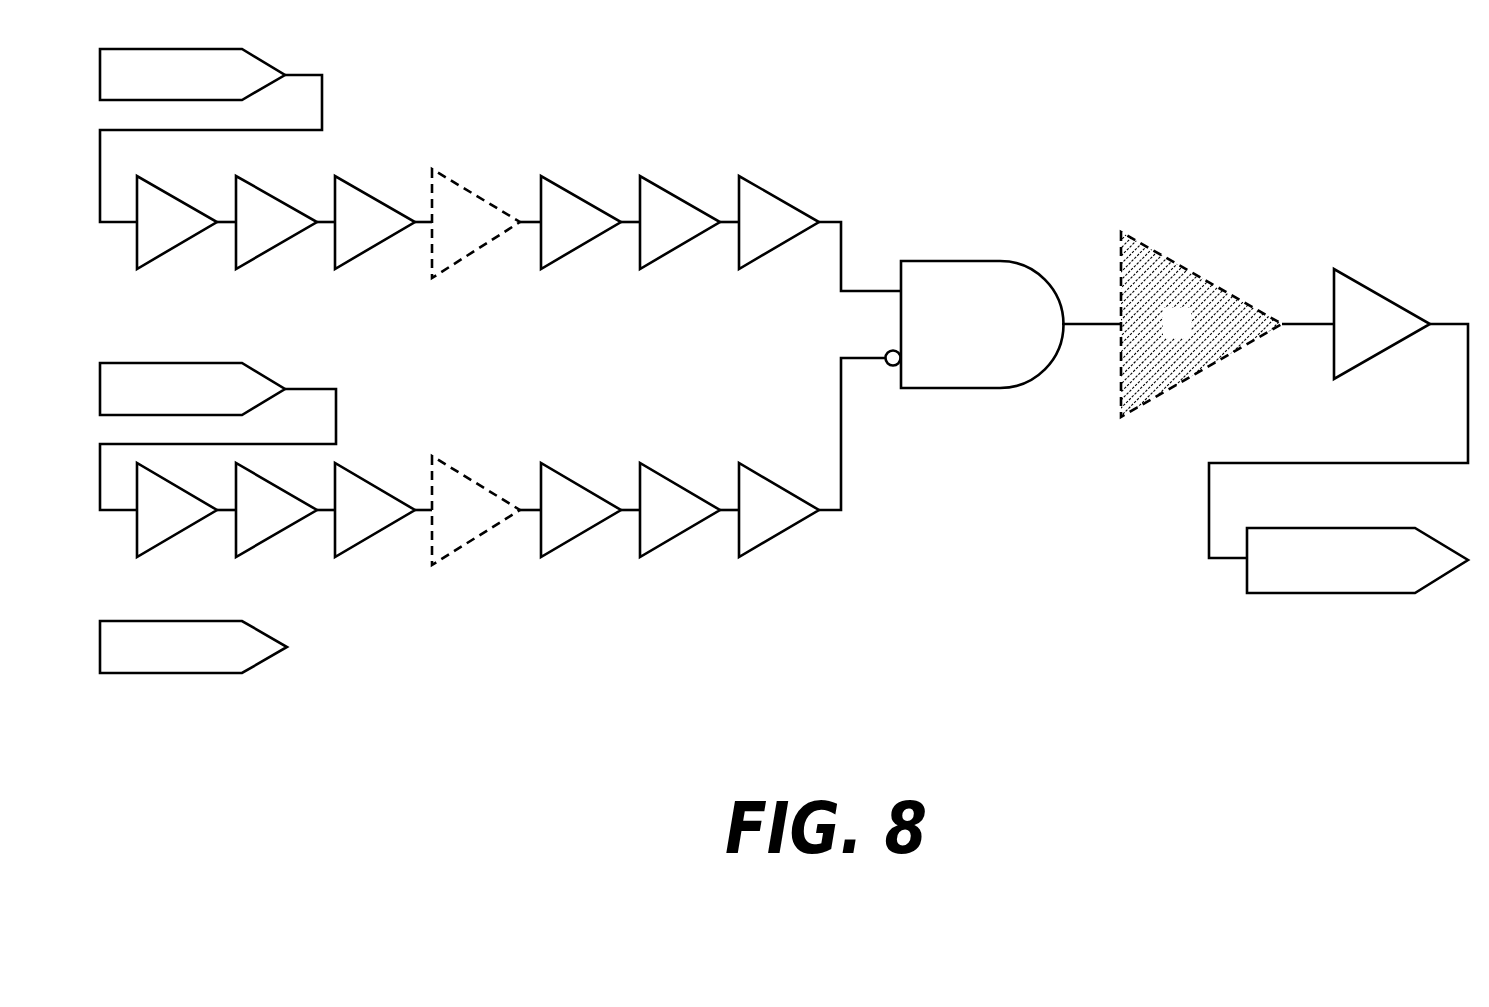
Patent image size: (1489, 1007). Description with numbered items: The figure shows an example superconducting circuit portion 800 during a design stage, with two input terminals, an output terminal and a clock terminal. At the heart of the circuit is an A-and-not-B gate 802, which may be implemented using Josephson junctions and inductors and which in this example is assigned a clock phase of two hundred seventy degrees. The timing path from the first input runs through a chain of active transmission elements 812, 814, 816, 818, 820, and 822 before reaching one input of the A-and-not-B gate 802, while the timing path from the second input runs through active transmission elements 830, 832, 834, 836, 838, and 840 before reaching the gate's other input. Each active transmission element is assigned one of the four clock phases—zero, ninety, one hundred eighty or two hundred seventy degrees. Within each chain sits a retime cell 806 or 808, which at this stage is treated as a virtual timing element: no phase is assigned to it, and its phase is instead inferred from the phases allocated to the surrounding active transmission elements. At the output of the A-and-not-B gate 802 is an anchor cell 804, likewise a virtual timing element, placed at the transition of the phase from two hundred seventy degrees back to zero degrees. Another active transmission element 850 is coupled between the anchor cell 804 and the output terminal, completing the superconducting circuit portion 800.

The superconducting circuit portion 800 is at (810, 758).
The A-and-not-B gate 802 is at (972, 389).
The anchor cell 804 is at (1243, 348).
The retime cell 806 is at (491, 244).
The retime cell 808 is at (491, 532).
The active transmission element 812 is at (187, 240).
The active transmission element 814 is at (290, 240).
The active transmission element 816 is at (392, 240).
The active transmission element 818 is at (599, 240).
The active transmission element 820 is at (697, 240).
The active transmission element 822 is at (799, 240).
The active transmission element 830 is at (187, 528).
The active transmission element 832 is at (290, 528).
The active transmission element 834 is at (392, 528).
The active transmission element 836 is at (599, 528).
The active transmission element 838 is at (697, 528).
The active transmission element 840 is at (799, 528).
The active transmission element 850 is at (1403, 343).